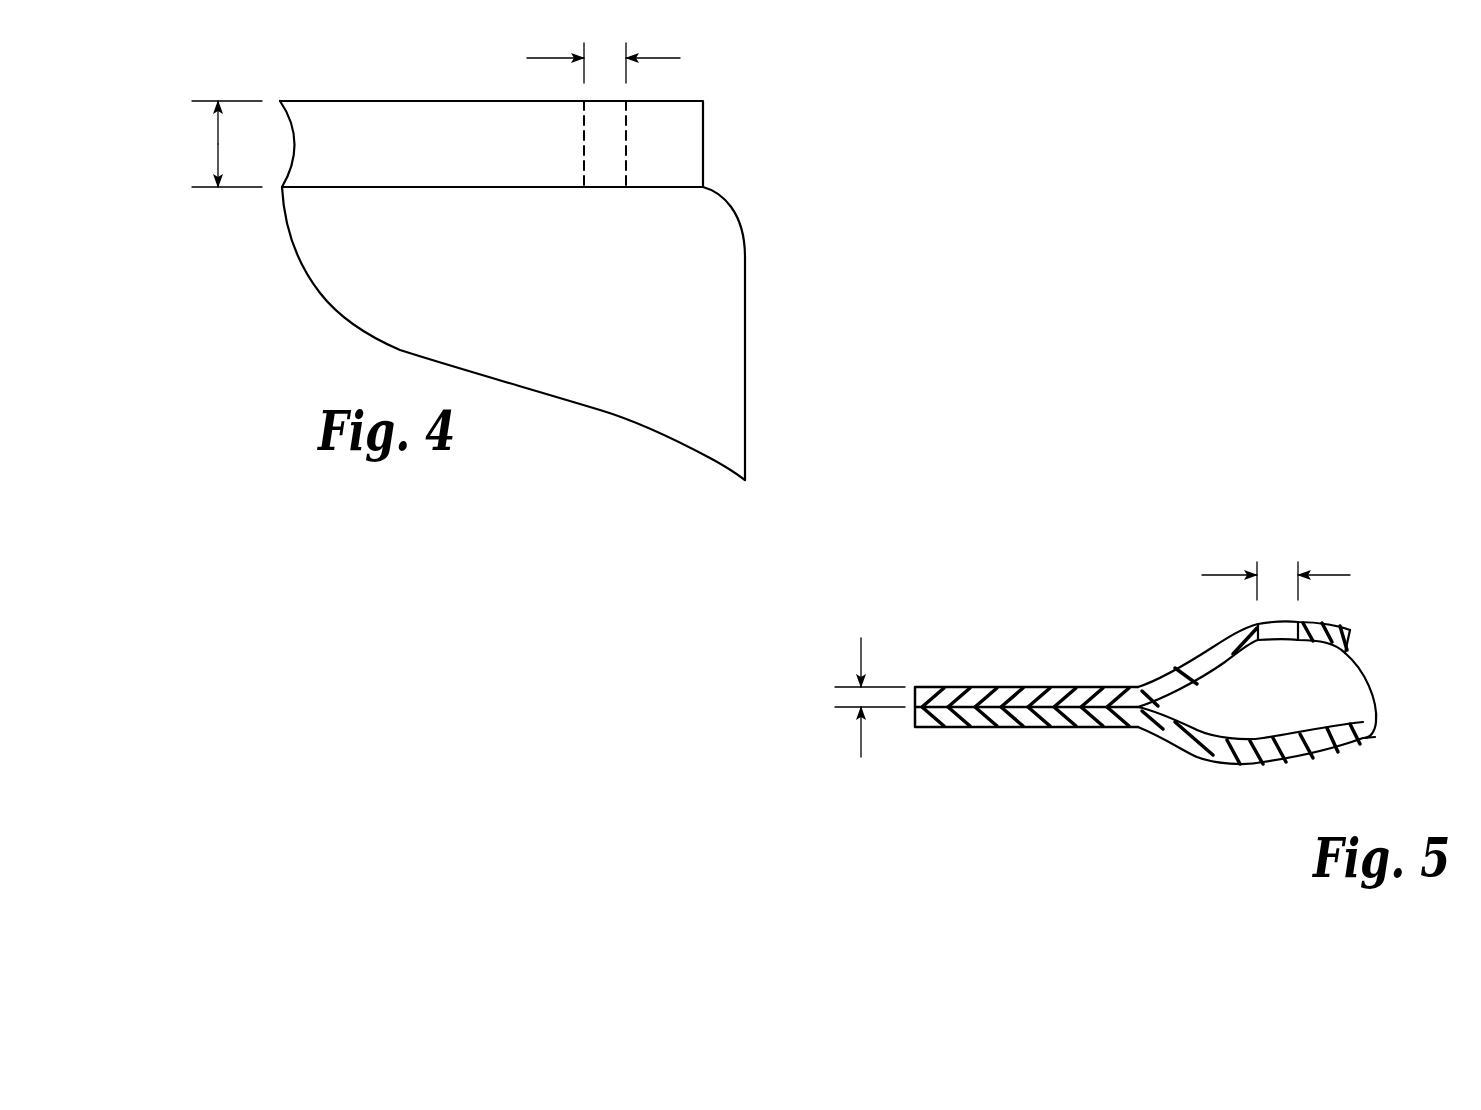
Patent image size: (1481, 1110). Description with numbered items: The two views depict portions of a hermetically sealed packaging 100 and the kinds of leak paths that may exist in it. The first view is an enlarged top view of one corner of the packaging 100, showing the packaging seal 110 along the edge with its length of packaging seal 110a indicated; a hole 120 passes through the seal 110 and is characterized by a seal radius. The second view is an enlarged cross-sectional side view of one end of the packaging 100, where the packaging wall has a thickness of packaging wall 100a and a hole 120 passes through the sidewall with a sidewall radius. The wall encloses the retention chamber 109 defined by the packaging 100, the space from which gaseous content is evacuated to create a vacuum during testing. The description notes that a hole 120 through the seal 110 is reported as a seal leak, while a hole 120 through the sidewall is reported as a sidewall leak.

In FIG. 4, the packaging 100 is at (623, 400).
In FIG. 5, the packaging 100 is at (1110, 532).
In FIG. 5, the thickness of packaging wall 100a is at (861, 742).
In FIG. 5, the retention chamber 109 is at (1338, 692).
In FIG. 4, the packaging seal 110 is at (452, 153).
In FIG. 5, the packaging seal 110 is at (1060, 670).
In FIG. 4, the length of packaging seal 110a is at (218, 140).
In FIG. 4, the hole in packaging 120 is at (604, 180).
In FIG. 5, the hole in packaging 120 is at (1283, 627).